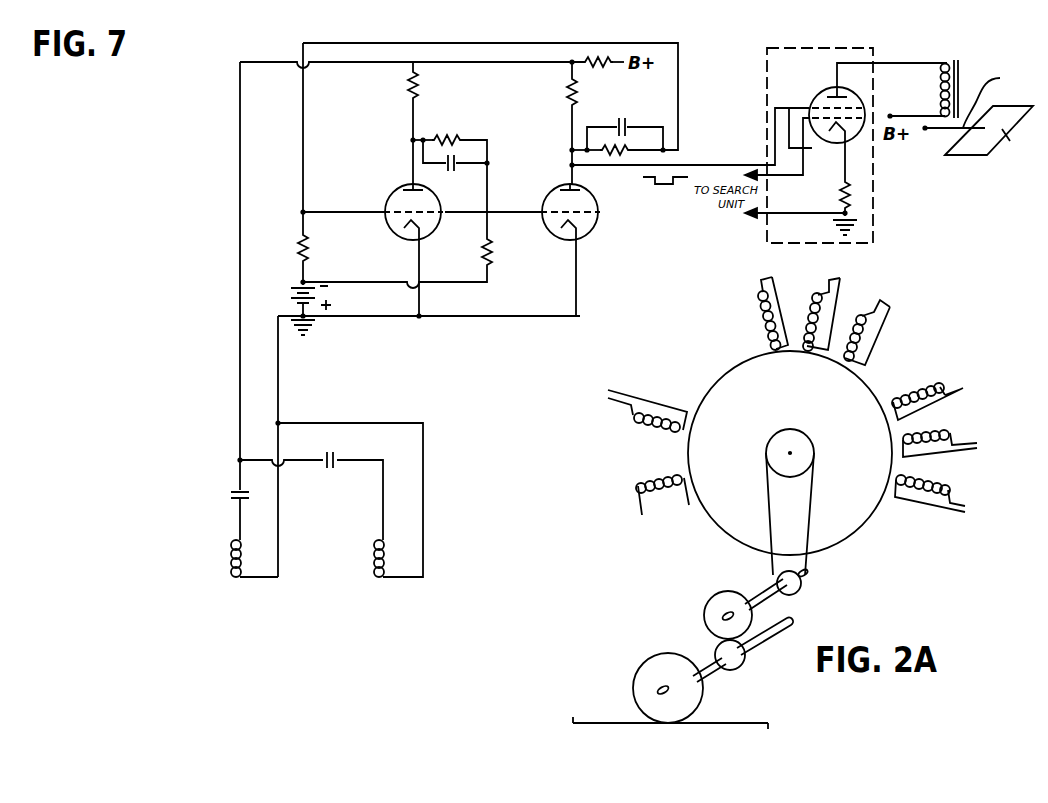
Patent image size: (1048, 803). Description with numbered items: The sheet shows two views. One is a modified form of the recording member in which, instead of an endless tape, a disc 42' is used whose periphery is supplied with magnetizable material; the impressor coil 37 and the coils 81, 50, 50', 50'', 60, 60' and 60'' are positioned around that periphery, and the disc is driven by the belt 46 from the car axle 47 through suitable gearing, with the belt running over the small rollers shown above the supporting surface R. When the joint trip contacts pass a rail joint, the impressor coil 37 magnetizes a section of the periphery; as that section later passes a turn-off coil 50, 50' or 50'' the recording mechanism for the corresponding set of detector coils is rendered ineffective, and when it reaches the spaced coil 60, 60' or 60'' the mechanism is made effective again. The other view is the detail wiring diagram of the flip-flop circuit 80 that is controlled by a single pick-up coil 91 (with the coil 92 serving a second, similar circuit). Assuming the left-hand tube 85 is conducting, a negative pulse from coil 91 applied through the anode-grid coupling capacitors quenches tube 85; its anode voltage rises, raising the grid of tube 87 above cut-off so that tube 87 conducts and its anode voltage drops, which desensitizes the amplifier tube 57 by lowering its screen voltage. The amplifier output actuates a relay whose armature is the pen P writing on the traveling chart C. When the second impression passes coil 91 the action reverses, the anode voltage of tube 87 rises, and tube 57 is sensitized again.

In FIG. 7, the left-hand tube 85 is at (394, 196).
In FIG. 7, the tube 87 is at (552, 197).
In FIG. 7, the flip-flop circuit 80 is at (540, 319).
In FIG. 7, the amplifier tube 57 is at (861, 105).
In FIG. 7, the coil 91 is at (228, 563).
In FIG. 7, the coil 92 is at (372, 563).
In FIG. 7, the pen P is at (987, 95).
In FIG. 7, the chart C is at (989, 141).
In FIG. 2A, the disc 42' is at (794, 453).
In FIG. 2A, the belt 46 is at (806, 529).
In FIG. 2A, the car axle 47 is at (710, 672).
In FIG. 2A, the record R is at (597, 720).
In FIG. 2A, the pick-up coil 50 is at (746, 313).
In FIG. 2A, the pick-up coil 50' is at (817, 308).
In FIG. 2A, the pick-up coil 50'' is at (867, 320).
In FIG. 2A, the impressor coil 37 is at (655, 428).
In FIG. 2A, the coil 81 is at (661, 496).
In FIG. 2A, the coil 60 is at (927, 379).
In FIG. 2A, the coil 60' is at (940, 426).
In FIG. 2A, the coil 60'' is at (939, 483).